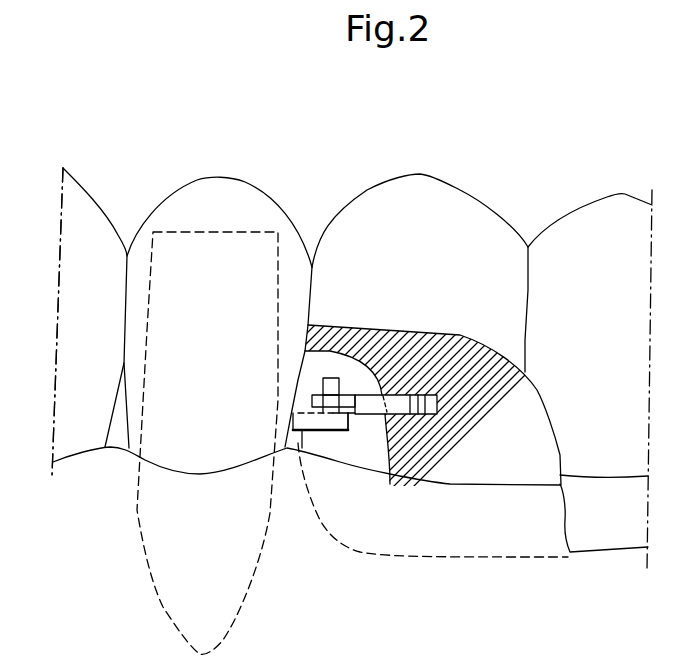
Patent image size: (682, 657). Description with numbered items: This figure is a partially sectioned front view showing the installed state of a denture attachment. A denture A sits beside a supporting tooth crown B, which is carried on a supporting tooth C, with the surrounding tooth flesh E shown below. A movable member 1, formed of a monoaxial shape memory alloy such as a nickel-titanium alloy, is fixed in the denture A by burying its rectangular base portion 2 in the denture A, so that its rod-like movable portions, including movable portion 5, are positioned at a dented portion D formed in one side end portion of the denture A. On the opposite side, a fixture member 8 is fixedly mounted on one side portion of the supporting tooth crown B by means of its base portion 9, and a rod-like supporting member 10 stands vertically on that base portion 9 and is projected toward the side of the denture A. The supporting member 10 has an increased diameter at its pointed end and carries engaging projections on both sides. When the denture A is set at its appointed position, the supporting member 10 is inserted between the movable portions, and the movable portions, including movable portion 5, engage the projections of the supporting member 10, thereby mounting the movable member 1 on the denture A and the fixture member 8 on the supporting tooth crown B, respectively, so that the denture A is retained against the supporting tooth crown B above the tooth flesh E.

The movable member 1 is at (382, 393).
The base portion 2 is at (393, 403).
The movable portion 5 is at (365, 386).
The fixture member 8 is at (333, 435).
The base portion 9 is at (349, 432).
The supporting member 10 is at (331, 378).
The denture A is at (445, 203).
The supporting tooth crown B is at (190, 200).
The supporting tooth C is at (222, 232).
The dented portion D is at (315, 442).
The tooth flesh E is at (75, 475).